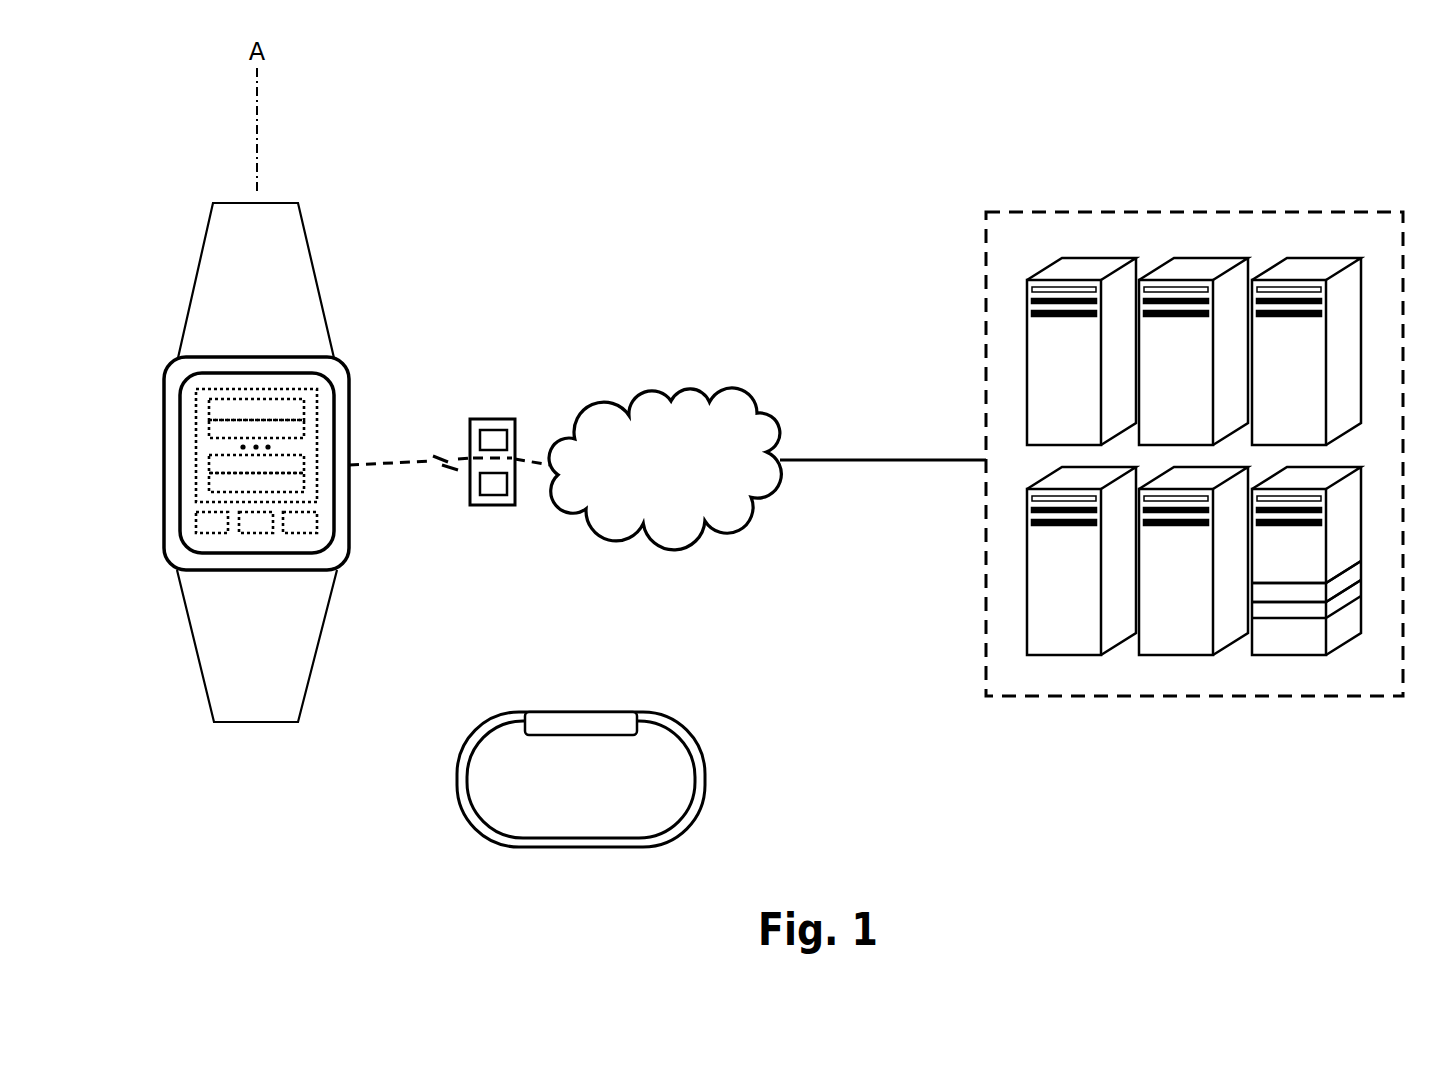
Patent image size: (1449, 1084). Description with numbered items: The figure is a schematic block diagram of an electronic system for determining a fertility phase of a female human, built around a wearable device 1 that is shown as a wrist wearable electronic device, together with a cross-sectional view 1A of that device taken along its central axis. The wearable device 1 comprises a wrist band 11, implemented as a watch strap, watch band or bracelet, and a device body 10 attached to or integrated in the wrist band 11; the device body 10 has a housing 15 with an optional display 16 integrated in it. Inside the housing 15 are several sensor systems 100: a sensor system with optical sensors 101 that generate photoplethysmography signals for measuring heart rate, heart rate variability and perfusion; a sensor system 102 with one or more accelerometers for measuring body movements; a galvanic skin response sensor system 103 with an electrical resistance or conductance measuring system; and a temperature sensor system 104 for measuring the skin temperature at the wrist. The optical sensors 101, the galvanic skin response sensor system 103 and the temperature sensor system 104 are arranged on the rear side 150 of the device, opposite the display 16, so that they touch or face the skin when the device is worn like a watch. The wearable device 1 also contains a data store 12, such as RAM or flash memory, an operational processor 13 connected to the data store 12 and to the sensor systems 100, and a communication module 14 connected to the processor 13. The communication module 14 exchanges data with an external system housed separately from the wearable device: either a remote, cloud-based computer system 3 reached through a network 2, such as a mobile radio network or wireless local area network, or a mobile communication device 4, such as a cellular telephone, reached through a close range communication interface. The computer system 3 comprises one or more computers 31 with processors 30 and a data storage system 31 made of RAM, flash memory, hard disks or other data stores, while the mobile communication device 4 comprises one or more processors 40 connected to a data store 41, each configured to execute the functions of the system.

The wearable device 1 is at (137, 605).
The cross-sectional view of the wearable device 1A is at (460, 822).
The network 2 is at (612, 527).
The computer system 3 is at (1360, 710).
The mobile communication device 4 is at (493, 418).
The device body 10 is at (352, 518).
The wrist band 11 is at (307, 280).
The data store 12 is at (198, 528).
The operational processor 13 is at (250, 531).
The communication module 14 is at (308, 528).
The housing 15 is at (342, 434).
The display 16 is at (323, 482).
The processor 30 is at (1352, 577).
The computer 31 is at (1352, 593).
The processor 40 is at (493, 490).
The data store 41 is at (500, 440).
The sensor systems 100 is at (315, 397).
The optical sensors 101 is at (212, 410).
The sensor system with accelerometers 102 is at (210, 431).
The galvanic skin response sensor system 103 is at (210, 460).
The temperature sensor system 104 is at (212, 487).
The rear side 150 is at (580, 738).